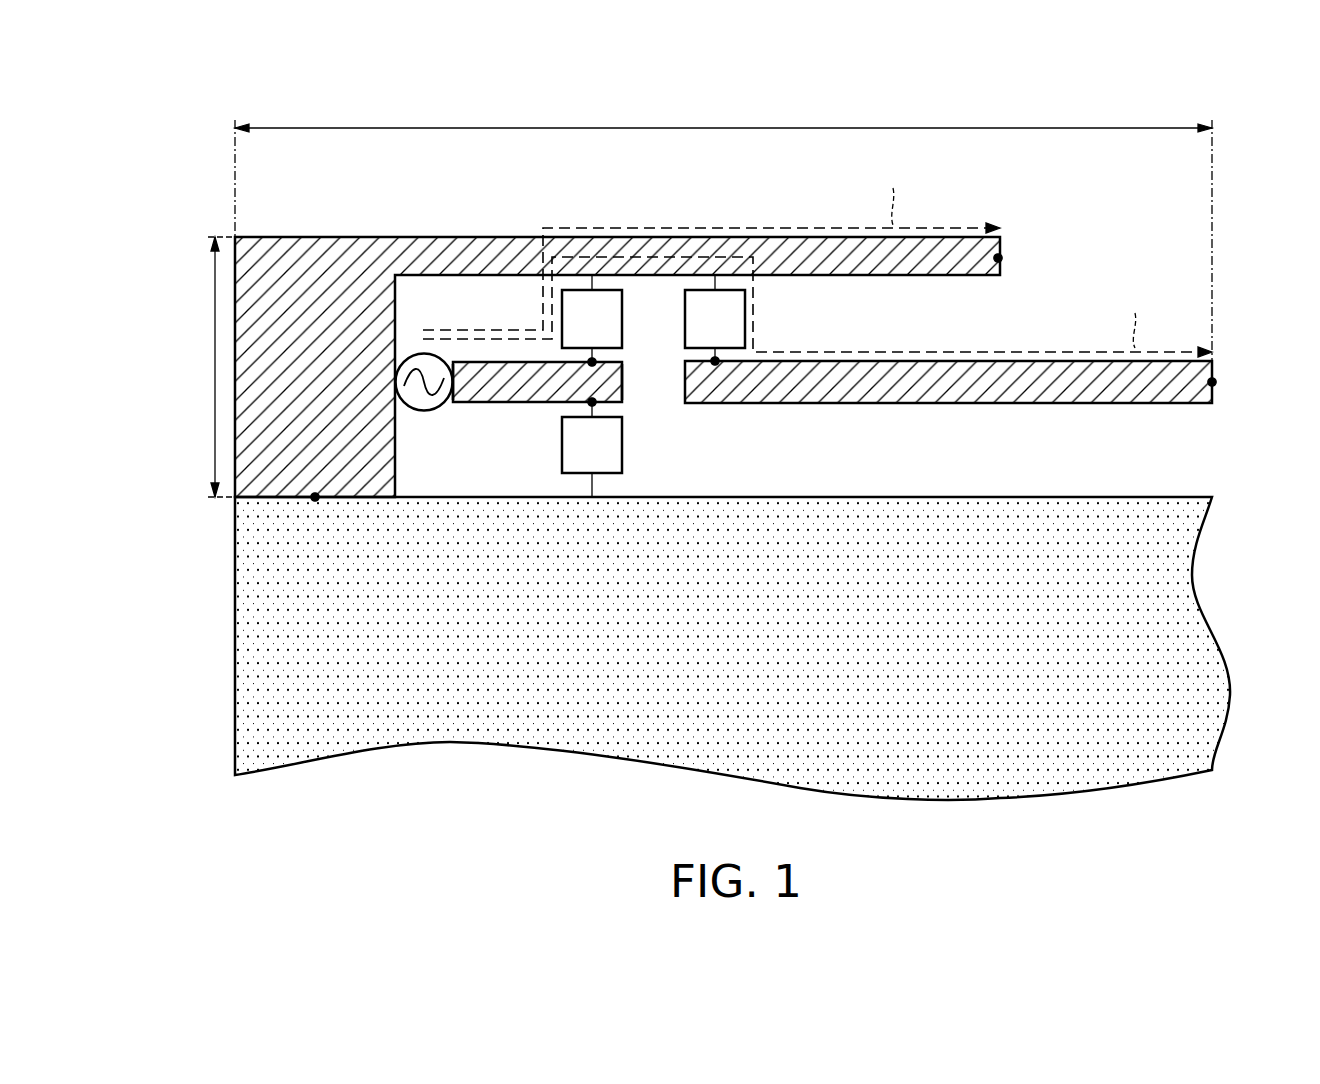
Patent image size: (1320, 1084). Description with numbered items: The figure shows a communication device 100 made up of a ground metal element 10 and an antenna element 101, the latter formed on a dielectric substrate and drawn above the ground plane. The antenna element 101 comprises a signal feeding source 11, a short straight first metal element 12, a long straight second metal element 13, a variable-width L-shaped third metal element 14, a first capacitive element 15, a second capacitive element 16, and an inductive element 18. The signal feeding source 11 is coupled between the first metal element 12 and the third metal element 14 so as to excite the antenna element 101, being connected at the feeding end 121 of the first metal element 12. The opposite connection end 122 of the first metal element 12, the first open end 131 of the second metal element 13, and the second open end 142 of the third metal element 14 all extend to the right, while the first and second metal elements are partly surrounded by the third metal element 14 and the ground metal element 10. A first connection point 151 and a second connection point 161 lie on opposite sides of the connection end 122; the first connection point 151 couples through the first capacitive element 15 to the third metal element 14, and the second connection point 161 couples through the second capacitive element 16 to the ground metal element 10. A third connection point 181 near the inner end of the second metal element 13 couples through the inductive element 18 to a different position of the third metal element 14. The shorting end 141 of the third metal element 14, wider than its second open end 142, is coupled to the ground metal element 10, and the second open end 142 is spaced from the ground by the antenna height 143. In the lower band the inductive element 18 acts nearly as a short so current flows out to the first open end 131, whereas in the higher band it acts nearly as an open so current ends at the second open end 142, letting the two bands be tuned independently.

The communication device 100 is at (162, 150).
The antenna element 101 is at (316, 222).
The ground metal element 10 is at (1116, 752).
The signal feeding source 11 is at (425, 411).
The first metal element 12 is at (528, 393).
The feeding end 121 is at (456, 382).
The connection end 122 is at (623, 382).
The second metal element 13 is at (940, 401).
The first open end 131 is at (1216, 382).
The third metal element 14 is at (855, 272).
The shorting end 141 is at (315, 501).
The second open end 142 is at (1002, 258).
The antenna height 143 is at (199, 367).
The first capacitive element 15 is at (623, 316).
The first connection point 151 is at (592, 364).
The second capacitive element 16 is at (560, 443).
The second connection point 161 is at (595, 403).
The inductive element 18 is at (747, 318).
The third connection point 181 is at (716, 364).